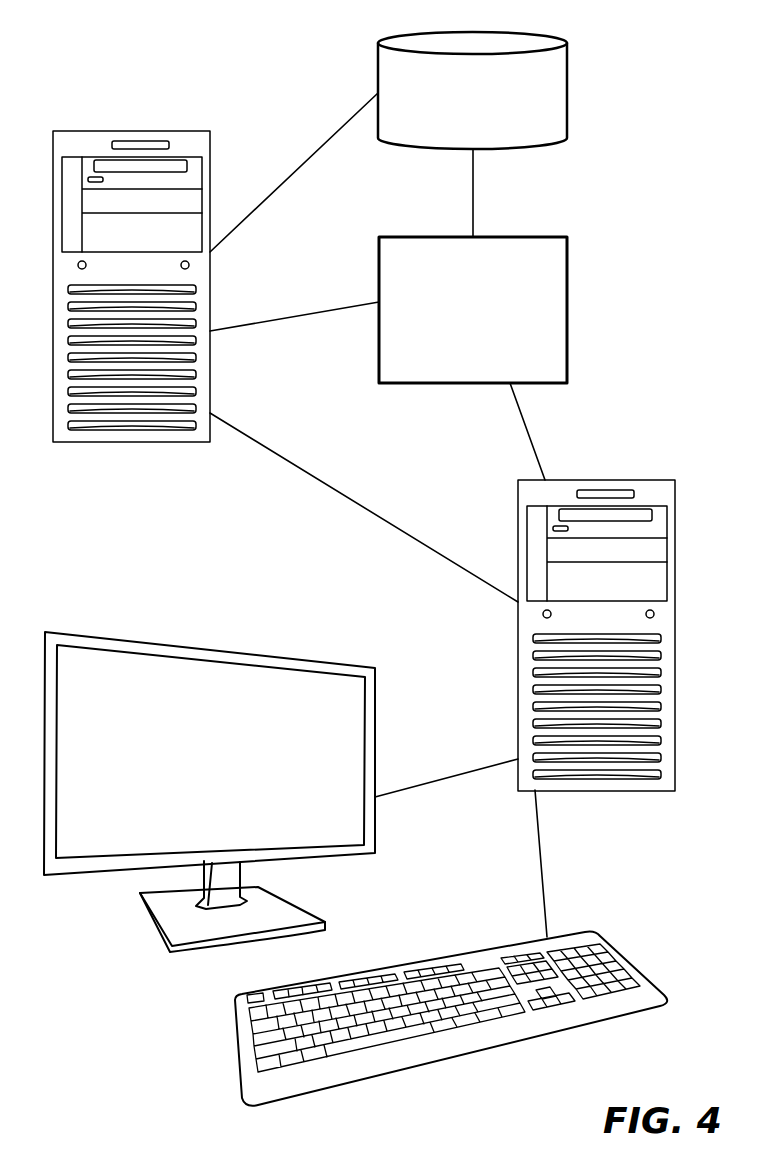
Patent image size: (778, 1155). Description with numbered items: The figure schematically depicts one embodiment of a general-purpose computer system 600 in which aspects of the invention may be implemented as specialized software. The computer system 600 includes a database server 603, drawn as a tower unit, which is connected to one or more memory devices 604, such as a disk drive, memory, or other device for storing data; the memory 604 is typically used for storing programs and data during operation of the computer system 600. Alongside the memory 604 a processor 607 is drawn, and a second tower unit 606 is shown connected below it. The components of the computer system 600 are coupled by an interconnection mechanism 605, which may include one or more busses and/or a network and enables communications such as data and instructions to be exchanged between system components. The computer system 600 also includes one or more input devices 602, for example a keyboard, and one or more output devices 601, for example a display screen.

The computer system 600 is at (662, 152).
The output device 601 is at (207, 650).
The input device 602 is at (617, 948).
The database server 603 is at (133, 131).
The memory device 604 is at (452, 128).
The interconnection mechanism 605 is at (340, 493).
The computer tower 606 is at (588, 480).
The processor 607 is at (453, 337).